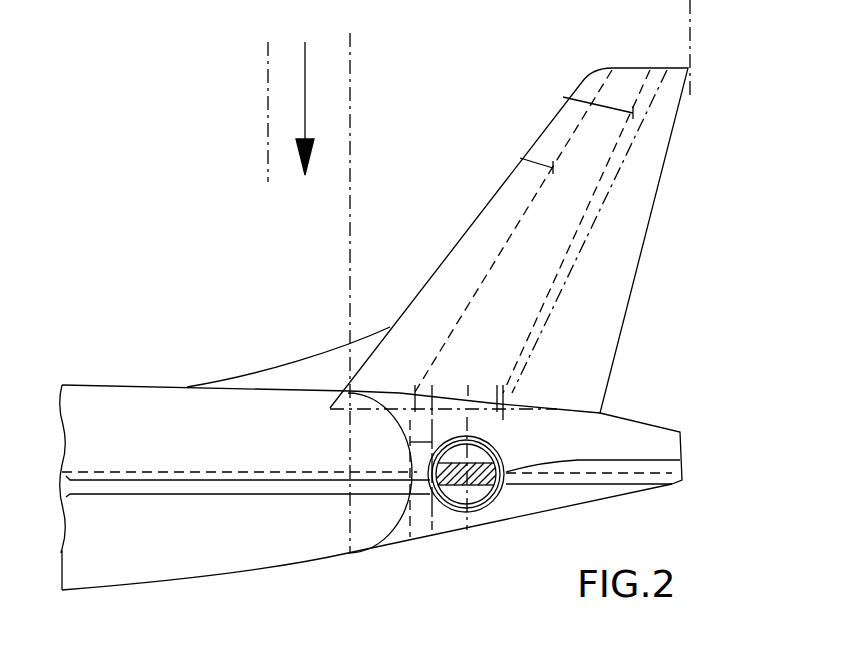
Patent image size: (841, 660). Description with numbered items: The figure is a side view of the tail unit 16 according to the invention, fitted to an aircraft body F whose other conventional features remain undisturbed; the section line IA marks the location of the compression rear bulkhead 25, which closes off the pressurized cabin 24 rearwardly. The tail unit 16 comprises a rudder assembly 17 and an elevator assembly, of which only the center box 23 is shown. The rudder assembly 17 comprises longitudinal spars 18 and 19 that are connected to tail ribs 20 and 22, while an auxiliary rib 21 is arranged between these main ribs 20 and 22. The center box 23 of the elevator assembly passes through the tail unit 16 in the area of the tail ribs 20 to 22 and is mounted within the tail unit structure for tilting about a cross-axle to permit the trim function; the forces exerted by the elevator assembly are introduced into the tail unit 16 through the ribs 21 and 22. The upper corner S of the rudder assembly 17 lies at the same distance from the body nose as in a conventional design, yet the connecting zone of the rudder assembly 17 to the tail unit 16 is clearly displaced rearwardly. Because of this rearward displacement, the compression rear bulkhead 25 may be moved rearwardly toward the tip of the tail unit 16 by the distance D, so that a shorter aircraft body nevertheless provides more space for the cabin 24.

The tail unit 16 is at (558, 511).
The rudder assembly 17 is at (700, 176).
The longitudinal spar 18 is at (521, 149).
The longitudinal spar 19 is at (581, 95).
The tail rib 20 is at (405, 518).
The auxiliary rib 21 is at (433, 530).
The tail rib 22 is at (503, 508).
The center box 23 is at (504, 461).
The cabin 24 is at (173, 447).
The compression rear bulkhead 25 is at (348, 527).
The distance D is at (198, 152).
The aircraft body F is at (112, 343).
The upper corner of the rudder assembly S is at (730, 32).
The section line IA is at (326, 281).